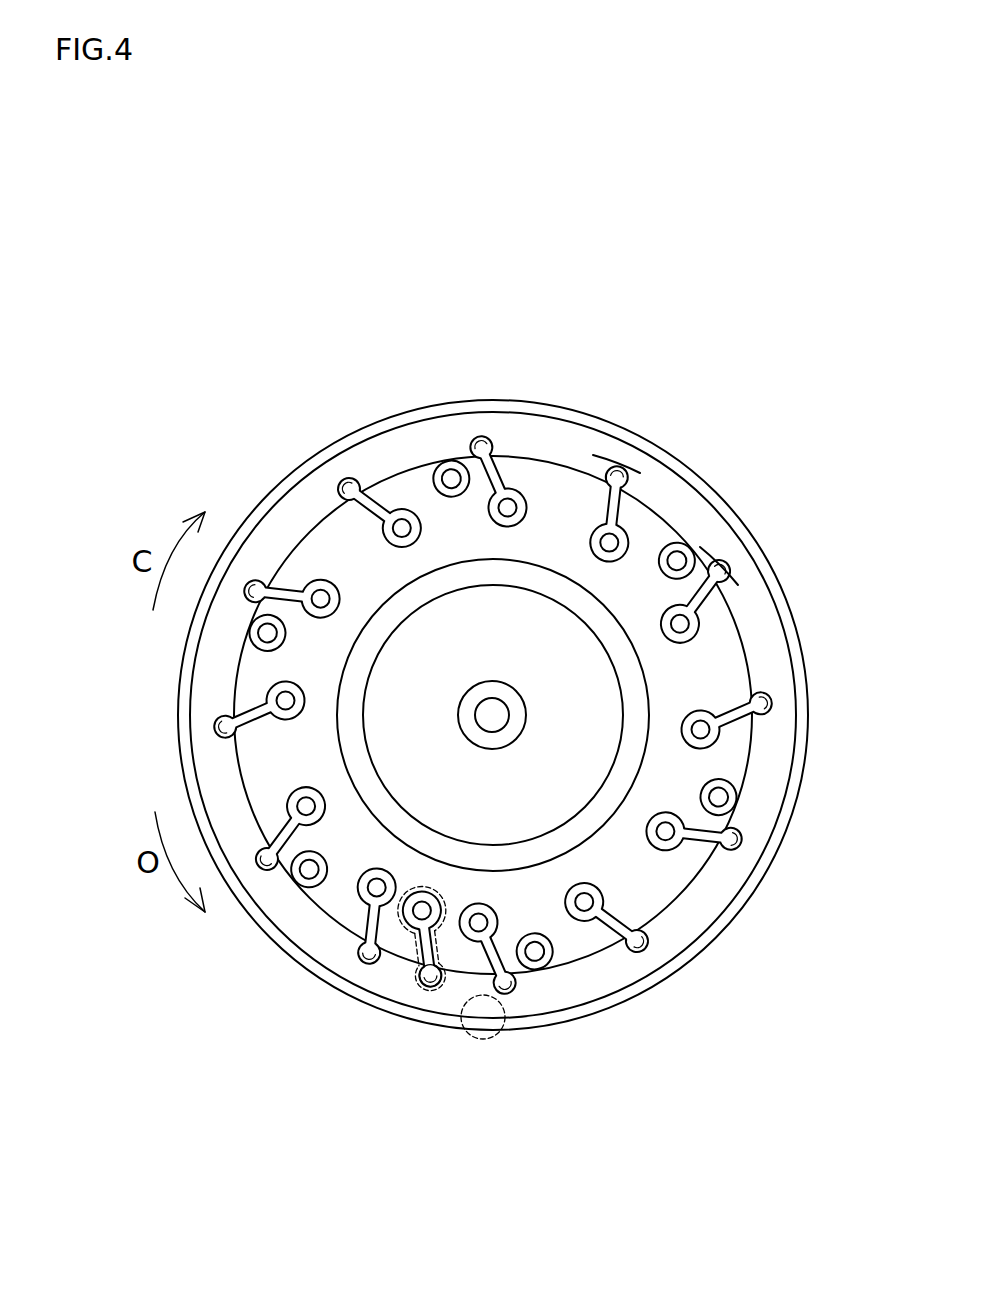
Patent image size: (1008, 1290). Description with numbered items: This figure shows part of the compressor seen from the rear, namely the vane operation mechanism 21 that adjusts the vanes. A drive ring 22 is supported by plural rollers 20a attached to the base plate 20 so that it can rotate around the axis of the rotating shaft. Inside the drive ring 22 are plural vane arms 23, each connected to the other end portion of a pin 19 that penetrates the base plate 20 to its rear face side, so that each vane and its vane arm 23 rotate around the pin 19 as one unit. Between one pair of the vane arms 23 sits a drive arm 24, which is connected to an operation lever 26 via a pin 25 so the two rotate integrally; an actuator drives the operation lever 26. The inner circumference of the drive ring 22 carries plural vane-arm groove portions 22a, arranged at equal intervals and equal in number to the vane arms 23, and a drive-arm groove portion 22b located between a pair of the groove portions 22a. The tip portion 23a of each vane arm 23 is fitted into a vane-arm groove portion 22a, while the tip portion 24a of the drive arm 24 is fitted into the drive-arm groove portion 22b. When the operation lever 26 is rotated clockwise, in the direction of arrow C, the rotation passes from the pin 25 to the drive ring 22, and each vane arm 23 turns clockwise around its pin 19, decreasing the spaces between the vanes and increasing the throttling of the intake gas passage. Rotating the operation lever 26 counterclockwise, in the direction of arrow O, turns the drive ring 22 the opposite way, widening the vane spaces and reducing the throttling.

The pin 19 is at (505, 508).
The base plate 20 is at (327, 540).
The roller 20a is at (458, 457).
The vane operation mechanism 21 is at (281, 384).
The drive ring 22 is at (528, 433).
The vane-arm groove portion 22a is at (614, 480).
The drive-arm groove portion 22b is at (440, 970).
The vane arm 23 is at (388, 500).
The tip portion 23a is at (608, 479).
The drive arm 24 is at (423, 937).
The tip portion 24a is at (428, 973).
The pin 25 is at (423, 907).
The operation lever 26 is at (520, 1003).